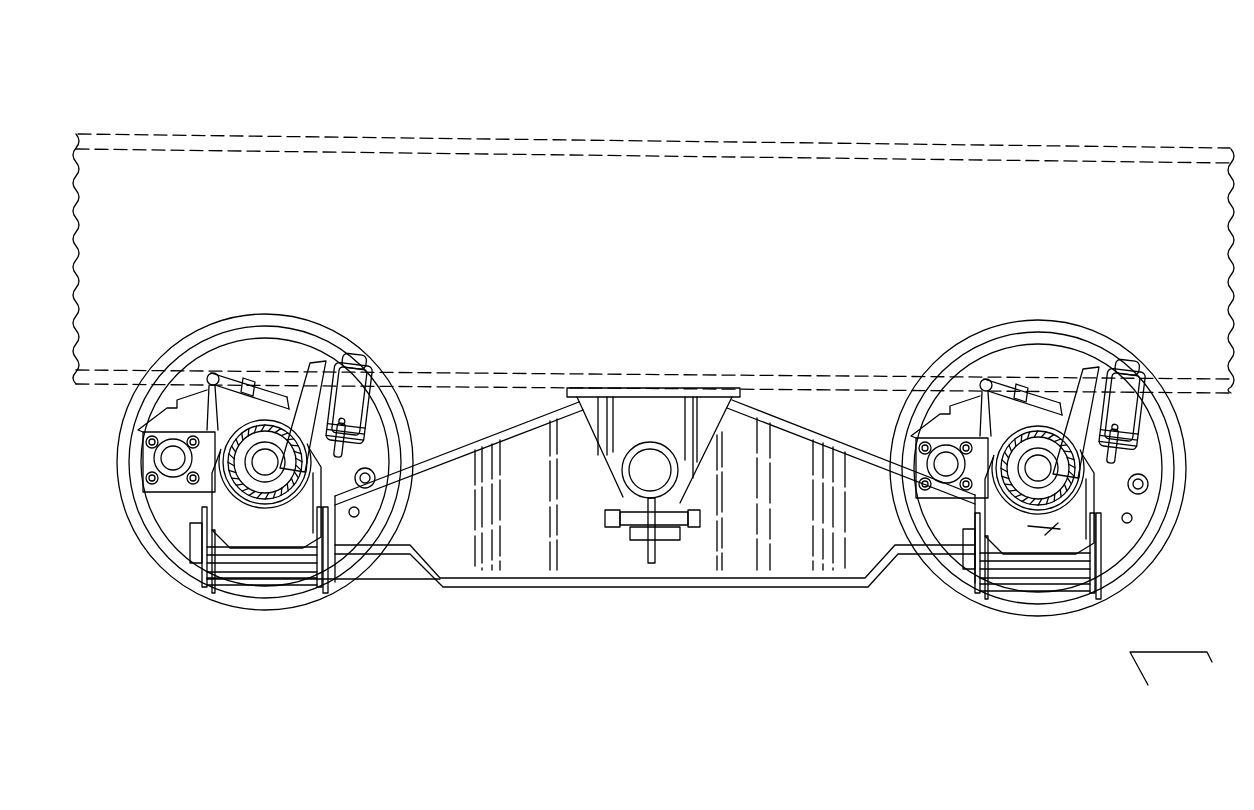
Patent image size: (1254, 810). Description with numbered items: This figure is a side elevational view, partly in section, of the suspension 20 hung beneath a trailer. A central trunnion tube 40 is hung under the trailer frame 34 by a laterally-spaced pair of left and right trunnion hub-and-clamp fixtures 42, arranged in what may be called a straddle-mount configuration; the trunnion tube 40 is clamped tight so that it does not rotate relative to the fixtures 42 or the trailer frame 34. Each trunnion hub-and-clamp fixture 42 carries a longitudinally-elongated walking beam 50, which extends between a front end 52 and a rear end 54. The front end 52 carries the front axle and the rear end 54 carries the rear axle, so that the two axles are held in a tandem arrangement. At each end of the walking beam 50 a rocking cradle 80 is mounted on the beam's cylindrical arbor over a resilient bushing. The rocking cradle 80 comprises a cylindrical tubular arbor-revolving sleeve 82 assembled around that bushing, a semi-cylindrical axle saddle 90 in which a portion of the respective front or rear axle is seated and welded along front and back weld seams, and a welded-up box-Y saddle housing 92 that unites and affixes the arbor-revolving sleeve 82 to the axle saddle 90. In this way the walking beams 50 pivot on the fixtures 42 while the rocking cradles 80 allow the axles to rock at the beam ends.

The suspension 20 is at (1178, 98).
The trailer frame 34 is at (243, 133).
The central trunnion tube 40 is at (647, 442).
The trunnion hub-and-clamp fixture 42 is at (743, 398).
The walking beam 50 is at (597, 588).
The front end 52 is at (327, 533).
The rear end 54 is at (978, 585).
The rocking cradle 80 is at (1086, 616).
The cylindrical tubular arbor-revolving sleeve 82 is at (1037, 590).
The semi-cylindrical axle saddle 90 is at (272, 495).
The box-Y saddle housing 92 is at (1052, 531).